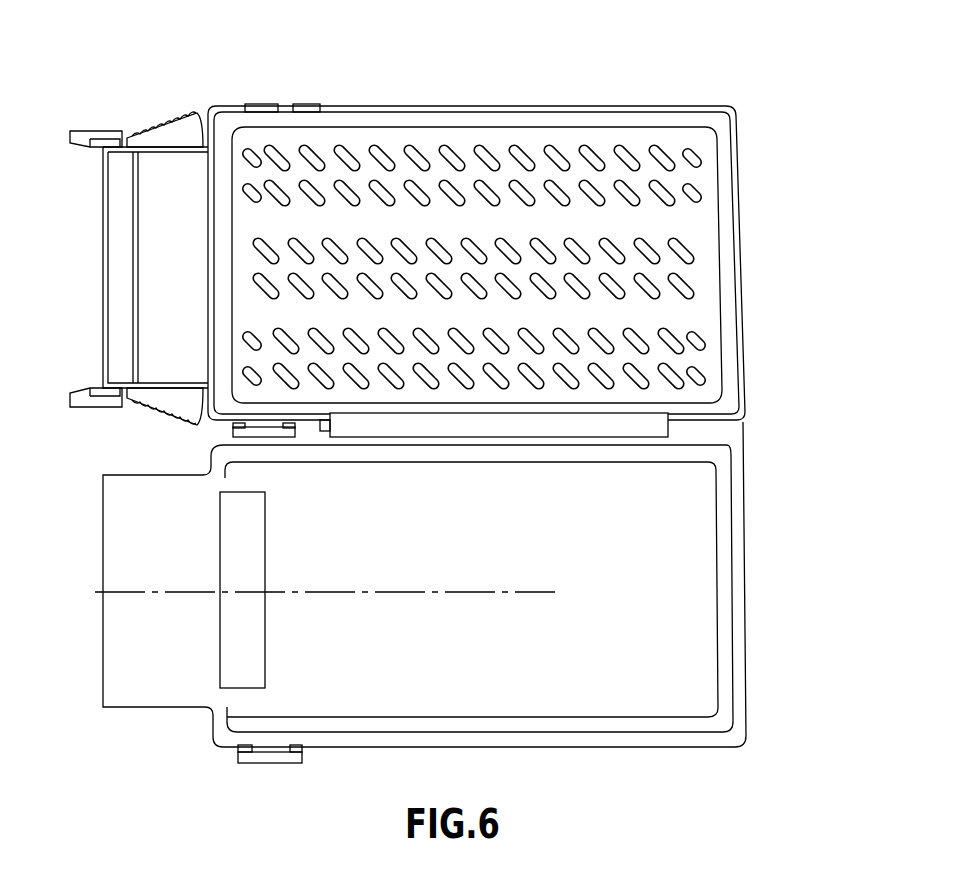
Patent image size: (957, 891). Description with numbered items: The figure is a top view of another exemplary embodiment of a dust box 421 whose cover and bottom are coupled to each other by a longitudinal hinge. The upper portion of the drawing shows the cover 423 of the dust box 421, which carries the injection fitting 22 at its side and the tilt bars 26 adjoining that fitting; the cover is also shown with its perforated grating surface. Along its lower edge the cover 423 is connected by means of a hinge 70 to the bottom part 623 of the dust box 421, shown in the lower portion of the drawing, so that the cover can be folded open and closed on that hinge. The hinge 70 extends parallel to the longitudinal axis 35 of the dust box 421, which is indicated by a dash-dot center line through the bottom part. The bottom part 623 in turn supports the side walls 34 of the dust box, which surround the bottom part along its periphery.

The dust box 421 is at (163, 93).
The cover 423 is at (733, 100).
The tilt bars 26 is at (120, 132).
The injection fitting 22 is at (160, 274).
The hinge 70 is at (648, 423).
The longitudinal axis 35 is at (545, 594).
The bottom part 623 is at (680, 596).
The side walls 34 is at (750, 642).